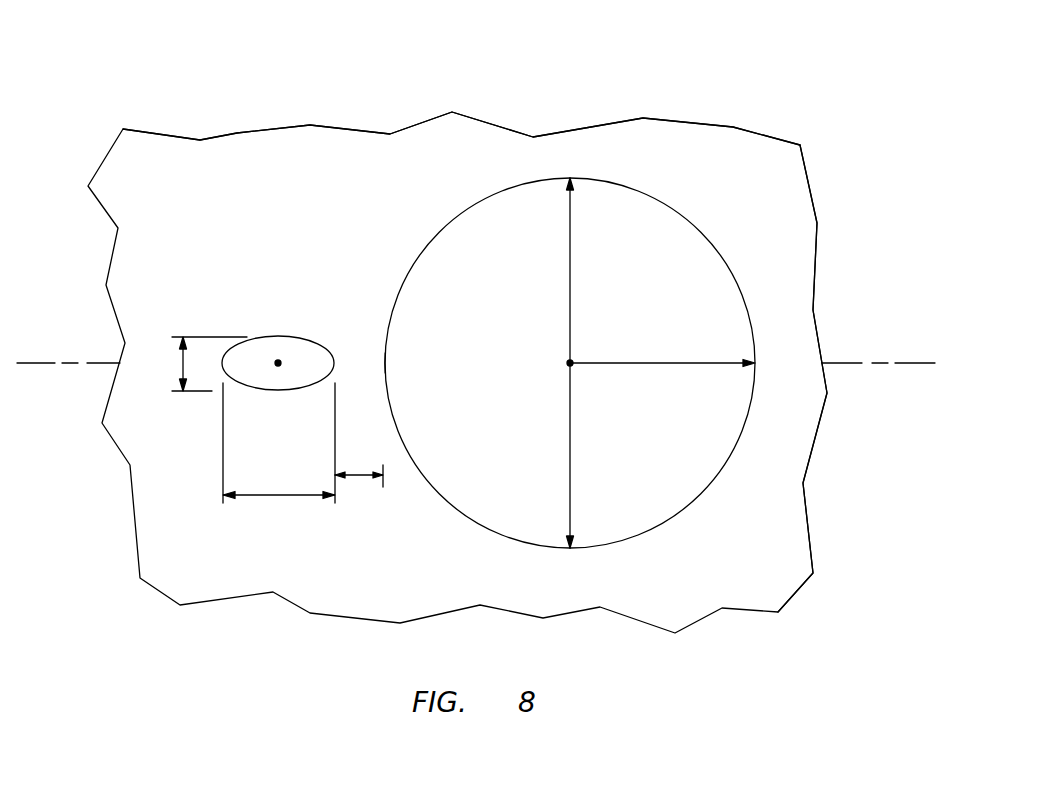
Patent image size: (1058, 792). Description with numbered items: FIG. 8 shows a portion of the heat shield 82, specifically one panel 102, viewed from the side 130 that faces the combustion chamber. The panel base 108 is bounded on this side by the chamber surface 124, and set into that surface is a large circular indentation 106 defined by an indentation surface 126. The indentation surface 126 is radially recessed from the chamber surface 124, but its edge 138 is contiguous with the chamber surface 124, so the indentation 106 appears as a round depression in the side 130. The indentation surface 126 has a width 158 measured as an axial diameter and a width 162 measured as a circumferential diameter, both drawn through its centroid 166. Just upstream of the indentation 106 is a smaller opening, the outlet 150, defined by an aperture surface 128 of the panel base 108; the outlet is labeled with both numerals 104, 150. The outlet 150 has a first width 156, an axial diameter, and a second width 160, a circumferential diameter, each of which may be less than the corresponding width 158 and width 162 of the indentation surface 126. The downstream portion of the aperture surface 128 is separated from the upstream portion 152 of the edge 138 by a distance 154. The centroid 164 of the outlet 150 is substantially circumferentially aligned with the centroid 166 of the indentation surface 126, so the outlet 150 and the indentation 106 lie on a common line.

The heat shield 82 is at (500, 327).
The panel 102 is at (500, 327).
The panel base 108 is at (813, 197).
The chamber surface 124 is at (235, 148).
The side 130 is at (772, 118).
The edge 138 is at (605, 178).
The indentation 106 is at (642, 463).
The indentation surface 126 is at (478, 520).
The upstream portion 152 is at (398, 346).
The width 162 is at (570, 287).
The centroid 166 is at (571, 362).
The width 158 is at (658, 365).
The small aperture 104 is at (297, 359).
The outlet 150 is at (294, 334).
The aperture surface 128 is at (255, 381).
The centroid 164 is at (278, 367).
The second width 160 is at (183, 365).
The first width 156 is at (278, 497).
The distance 154 is at (360, 477).